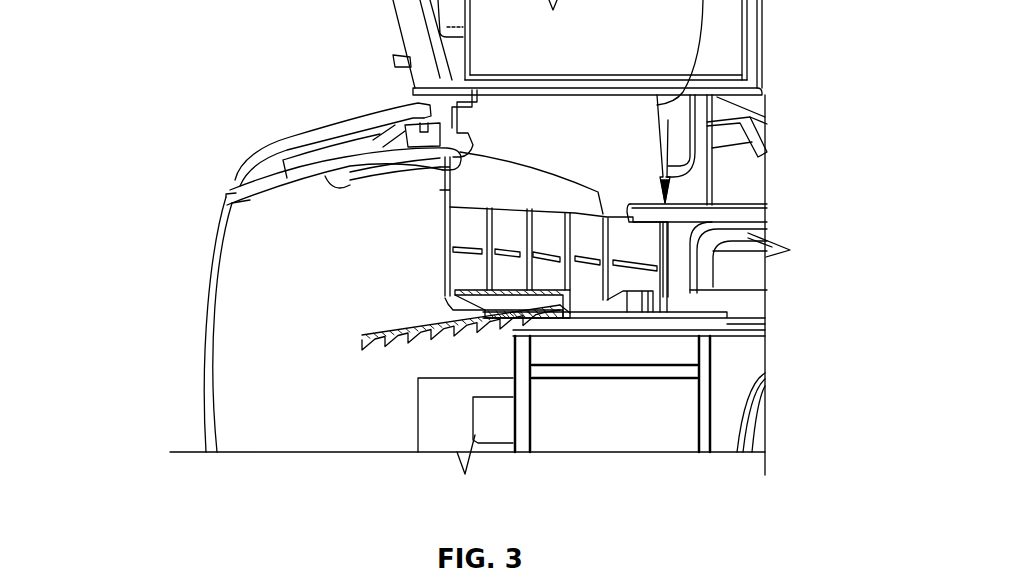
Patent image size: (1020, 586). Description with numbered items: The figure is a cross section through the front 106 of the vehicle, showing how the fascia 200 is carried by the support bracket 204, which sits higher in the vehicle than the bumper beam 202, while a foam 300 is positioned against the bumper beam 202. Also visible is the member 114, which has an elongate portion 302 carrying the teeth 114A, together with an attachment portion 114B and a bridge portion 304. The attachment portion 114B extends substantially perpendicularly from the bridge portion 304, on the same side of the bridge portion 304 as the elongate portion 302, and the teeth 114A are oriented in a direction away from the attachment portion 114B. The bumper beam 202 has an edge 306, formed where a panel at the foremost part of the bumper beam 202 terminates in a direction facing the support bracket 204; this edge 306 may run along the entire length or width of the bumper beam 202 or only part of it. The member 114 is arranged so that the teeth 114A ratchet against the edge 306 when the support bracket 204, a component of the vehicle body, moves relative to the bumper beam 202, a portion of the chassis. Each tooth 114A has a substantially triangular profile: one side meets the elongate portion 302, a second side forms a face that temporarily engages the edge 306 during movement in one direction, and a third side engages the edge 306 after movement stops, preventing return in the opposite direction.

The front of the vehicle 106 is at (114, 32).
The member 114 is at (341, 323).
The teeth 114A is at (414, 343).
The attachment portion 114B is at (517, 290).
The fascia 200 is at (463, 129).
The bumper beam 202 is at (533, 410).
The support bracket 204 is at (453, 240).
The foam 300 is at (445, 437).
The elongate portion 302 is at (432, 325).
The bridge portion 304 is at (572, 300).
The edge 306 is at (497, 440).